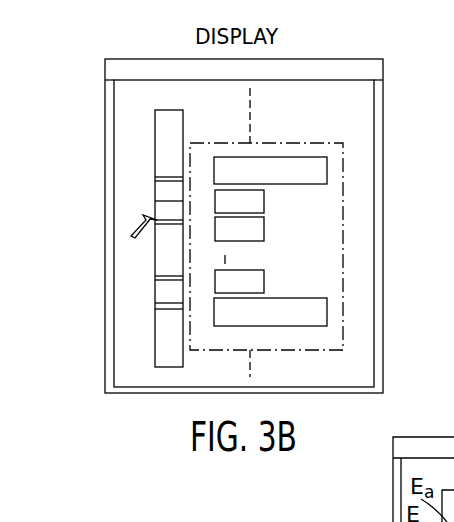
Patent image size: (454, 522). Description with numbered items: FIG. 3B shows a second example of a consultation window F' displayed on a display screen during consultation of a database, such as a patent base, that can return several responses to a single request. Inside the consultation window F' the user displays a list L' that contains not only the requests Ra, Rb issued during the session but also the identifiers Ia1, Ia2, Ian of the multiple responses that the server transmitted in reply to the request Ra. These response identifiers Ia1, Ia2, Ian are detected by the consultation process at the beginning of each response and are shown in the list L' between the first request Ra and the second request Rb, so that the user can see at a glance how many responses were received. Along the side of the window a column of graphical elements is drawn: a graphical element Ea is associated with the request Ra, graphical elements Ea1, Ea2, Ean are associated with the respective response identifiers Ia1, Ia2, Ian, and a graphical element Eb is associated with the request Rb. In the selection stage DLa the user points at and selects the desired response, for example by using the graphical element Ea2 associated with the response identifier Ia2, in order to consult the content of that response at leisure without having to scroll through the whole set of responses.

The consultation window F' is at (263, 226).
The list L' is at (276, 228).
The graphical element Ea is at (160, 174).
The graphical element Ea1 is at (172, 181).
The graphical element Ea2 is at (172, 222).
The graphical element Ean is at (172, 278).
The graphical element Eb is at (172, 308).
The selection stage DLa is at (155, 223).
The request Ra is at (270, 171).
The request Rb is at (270, 313).
The response identifier Ia1 is at (239, 201).
The response identifier Ia2 is at (239, 229).
The response identifier Ian is at (239, 281).